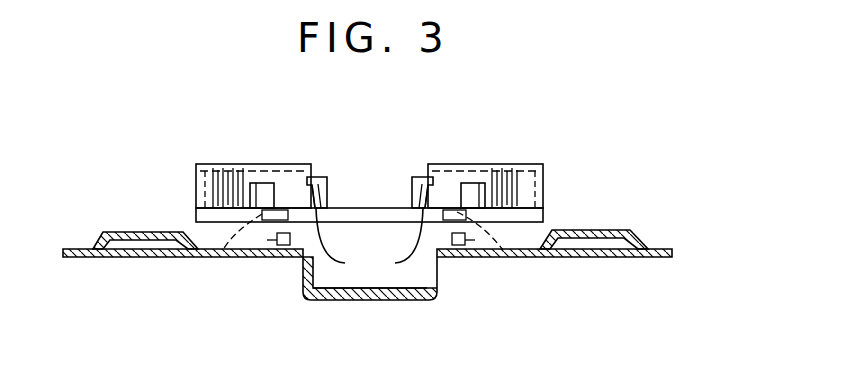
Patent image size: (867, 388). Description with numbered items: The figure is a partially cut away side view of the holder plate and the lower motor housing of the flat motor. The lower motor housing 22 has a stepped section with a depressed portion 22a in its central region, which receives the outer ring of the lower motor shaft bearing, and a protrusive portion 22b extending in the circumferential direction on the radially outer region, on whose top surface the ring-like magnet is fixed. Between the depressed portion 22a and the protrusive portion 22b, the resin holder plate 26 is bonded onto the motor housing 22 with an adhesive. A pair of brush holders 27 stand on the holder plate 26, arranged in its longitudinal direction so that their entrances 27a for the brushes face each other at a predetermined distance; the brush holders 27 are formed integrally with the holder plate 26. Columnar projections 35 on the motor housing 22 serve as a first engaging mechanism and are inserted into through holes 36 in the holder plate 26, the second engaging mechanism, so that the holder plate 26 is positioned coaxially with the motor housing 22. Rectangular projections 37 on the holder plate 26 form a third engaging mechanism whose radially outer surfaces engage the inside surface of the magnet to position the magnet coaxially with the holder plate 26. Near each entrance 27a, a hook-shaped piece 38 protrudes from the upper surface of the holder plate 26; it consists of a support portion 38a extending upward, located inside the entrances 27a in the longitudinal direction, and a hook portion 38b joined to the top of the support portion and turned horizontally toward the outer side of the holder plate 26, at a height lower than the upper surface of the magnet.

The lower motor housing 22 is at (543, 252).
The depressed portion 22a is at (382, 297).
The protrusive portion 22b is at (603, 232).
The holder plate 26 is at (543, 217).
The brush holder 27 is at (196, 182).
The entrance 27a is at (369, 242).
The columnar projection 35 is at (277, 240).
The through hole 36 is at (218, 254).
The rectangular projection 37 is at (258, 190).
The hook-shaped piece 38 is at (408, 188).
The support portion 38a is at (410, 199).
The hook portion 38b is at (316, 176).